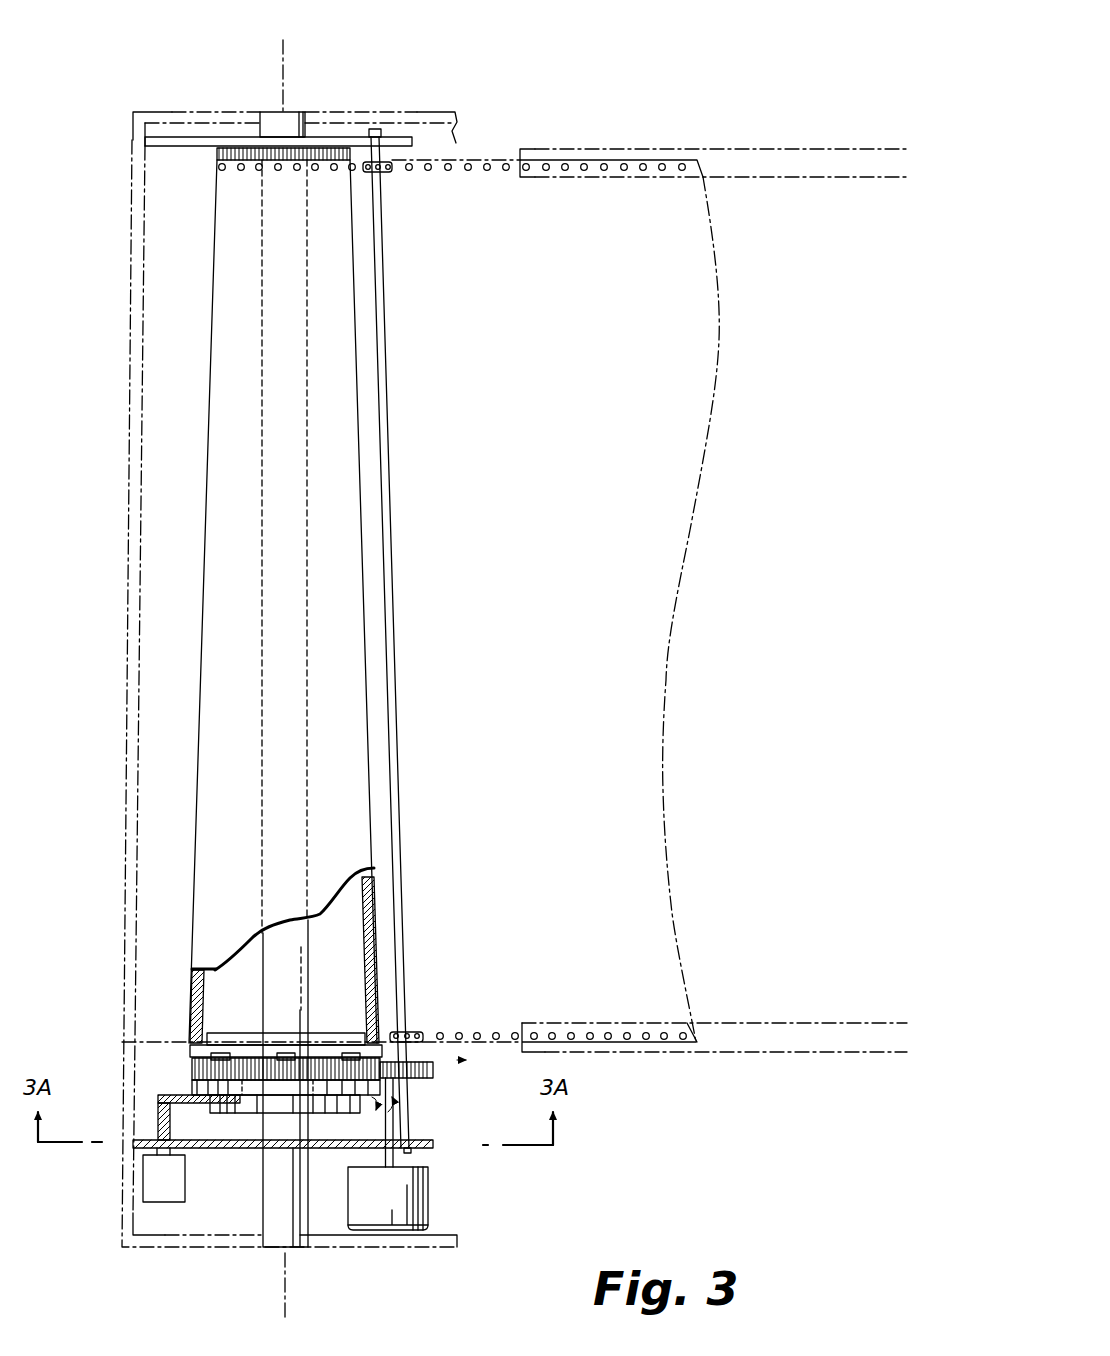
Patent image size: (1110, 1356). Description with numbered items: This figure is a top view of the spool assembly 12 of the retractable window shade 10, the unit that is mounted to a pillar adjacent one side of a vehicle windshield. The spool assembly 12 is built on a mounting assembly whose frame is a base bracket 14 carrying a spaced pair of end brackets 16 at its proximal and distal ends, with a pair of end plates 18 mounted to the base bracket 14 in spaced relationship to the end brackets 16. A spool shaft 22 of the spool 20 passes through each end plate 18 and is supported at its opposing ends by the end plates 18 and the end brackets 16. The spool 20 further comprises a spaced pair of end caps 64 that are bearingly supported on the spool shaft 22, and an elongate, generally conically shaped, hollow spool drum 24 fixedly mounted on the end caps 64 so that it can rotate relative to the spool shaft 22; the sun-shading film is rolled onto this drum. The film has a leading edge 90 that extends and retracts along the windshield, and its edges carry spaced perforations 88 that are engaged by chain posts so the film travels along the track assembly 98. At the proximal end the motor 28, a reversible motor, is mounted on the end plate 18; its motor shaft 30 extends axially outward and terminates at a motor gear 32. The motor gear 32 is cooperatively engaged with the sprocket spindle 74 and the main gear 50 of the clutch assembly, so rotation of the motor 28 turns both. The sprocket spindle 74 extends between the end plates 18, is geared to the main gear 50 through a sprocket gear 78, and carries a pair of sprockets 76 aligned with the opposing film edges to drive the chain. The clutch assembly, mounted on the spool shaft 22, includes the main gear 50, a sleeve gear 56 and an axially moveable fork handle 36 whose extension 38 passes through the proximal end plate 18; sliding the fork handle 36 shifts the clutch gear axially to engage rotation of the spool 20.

The retractable window shade 10 is at (140, 56).
The spool assembly 12 is at (152, 112).
The base bracket 14 is at (130, 332).
The end bracket 16 is at (375, 112).
The end plate 18 is at (145, 138).
The spool 20 is at (335, 352).
The spool shaft 22 is at (290, 118).
The spool drum 24 is at (375, 893).
The motor 28 is at (428, 1210).
The motor shaft 30 is at (393, 1163).
The motor gear 32 is at (395, 1085).
The fork handle 36 is at (158, 1097).
The extension 38 is at (143, 1193).
The main gear 50 is at (190, 1065).
The sleeve gear 56 is at (188, 1050).
The end cap 64 is at (215, 1033).
The sprocket spindle 74 is at (400, 728).
The sprocket 76 is at (392, 172).
The sprocket gear 78 is at (435, 1070).
The perforations 88 is at (500, 160).
The leading edge 90 is at (670, 645).
The track assembly 98 is at (737, 149).